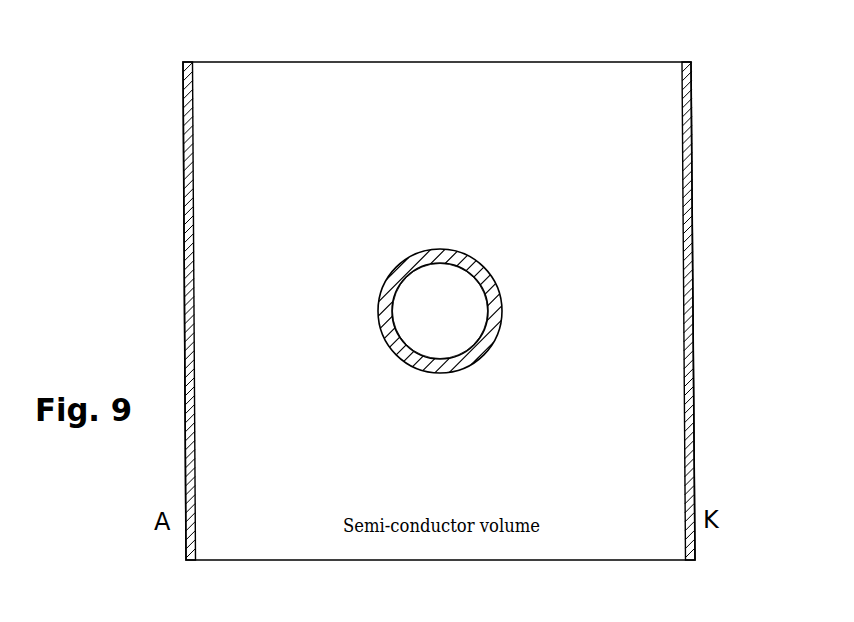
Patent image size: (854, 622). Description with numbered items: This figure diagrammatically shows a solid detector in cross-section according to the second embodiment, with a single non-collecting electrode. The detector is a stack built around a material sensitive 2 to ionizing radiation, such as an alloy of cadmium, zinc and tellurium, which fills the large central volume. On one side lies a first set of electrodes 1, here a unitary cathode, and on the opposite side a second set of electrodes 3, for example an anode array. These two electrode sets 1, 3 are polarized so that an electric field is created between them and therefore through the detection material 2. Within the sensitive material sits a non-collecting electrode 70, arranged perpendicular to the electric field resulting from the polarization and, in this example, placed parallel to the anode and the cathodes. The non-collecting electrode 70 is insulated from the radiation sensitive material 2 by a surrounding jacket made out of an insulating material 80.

The first set of electrodes 1 is at (694, 432).
The material sensitive to ionizing radiation 2 is at (591, 120).
The second set of electrodes 3 is at (184, 340).
The non-collecting electrode 70 is at (443, 282).
The jacket made out of an insulating material 80 is at (500, 318).